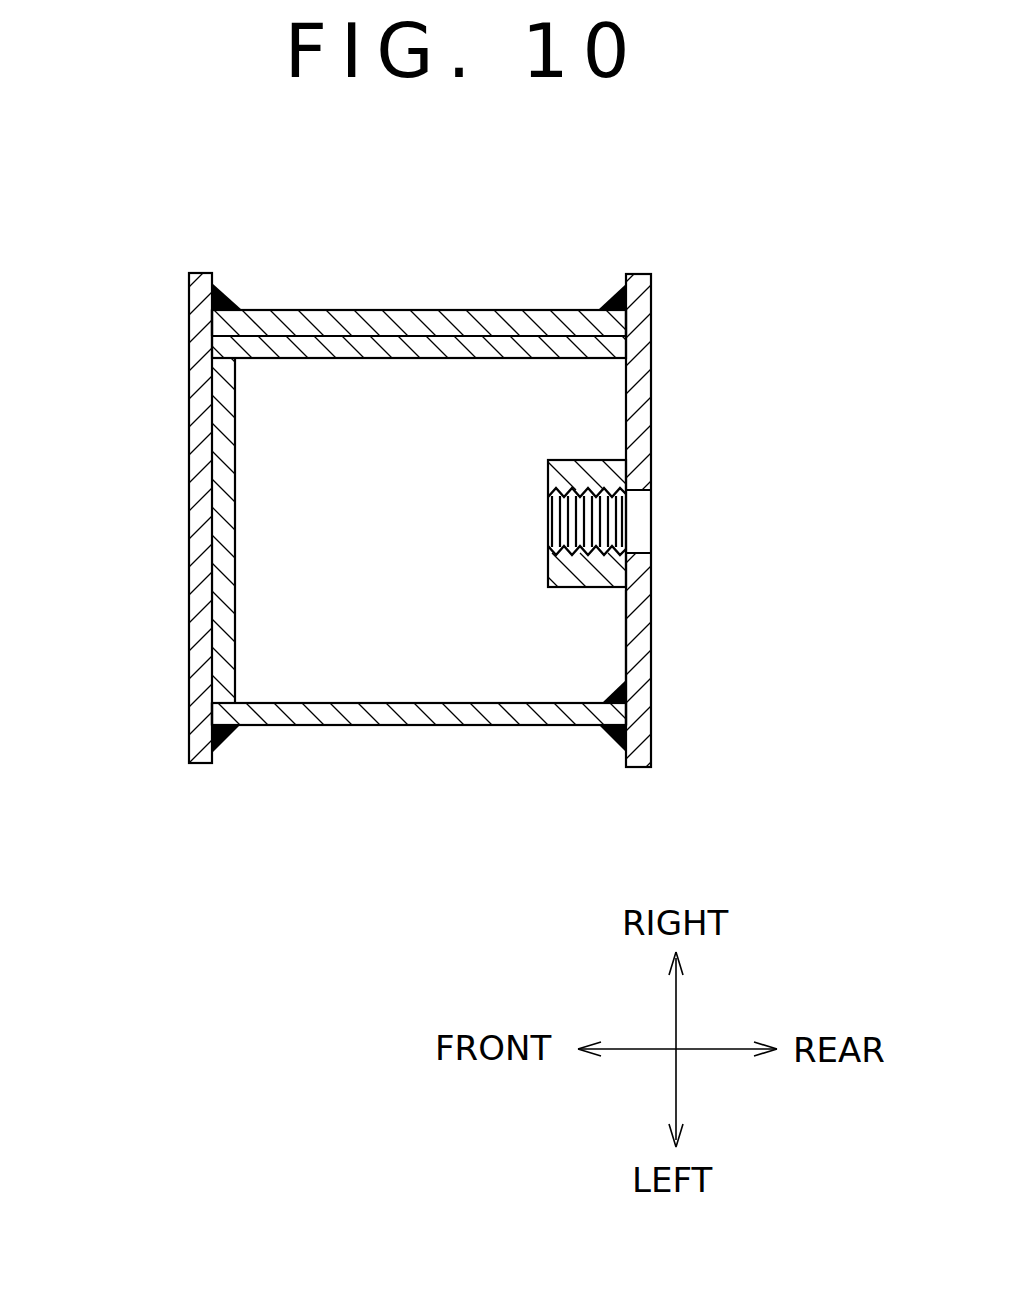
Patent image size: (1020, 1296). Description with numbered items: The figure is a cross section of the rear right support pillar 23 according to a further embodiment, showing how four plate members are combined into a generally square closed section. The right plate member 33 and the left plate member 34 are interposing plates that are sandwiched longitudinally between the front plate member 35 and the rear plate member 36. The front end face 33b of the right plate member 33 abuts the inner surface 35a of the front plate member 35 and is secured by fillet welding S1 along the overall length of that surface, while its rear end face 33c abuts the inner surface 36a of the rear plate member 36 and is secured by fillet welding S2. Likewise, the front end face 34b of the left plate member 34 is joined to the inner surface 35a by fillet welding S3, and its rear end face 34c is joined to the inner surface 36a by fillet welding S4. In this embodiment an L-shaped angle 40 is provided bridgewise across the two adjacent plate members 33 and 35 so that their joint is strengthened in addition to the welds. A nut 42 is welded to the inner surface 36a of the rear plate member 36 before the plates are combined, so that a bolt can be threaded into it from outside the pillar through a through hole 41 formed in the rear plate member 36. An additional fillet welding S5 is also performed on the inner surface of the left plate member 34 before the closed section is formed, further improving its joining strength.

The rear right support pillar 23 is at (327, 828).
The right plate member 33 is at (394, 310).
The front end face of the right plate member 33b is at (212, 320).
The rear end face of the right plate member 33c is at (627, 322).
The left plate member 34 is at (402, 727).
The front end face of the left plate member 34b is at (212, 703).
The rear end face of the left plate member 34c is at (627, 724).
The front plate member 35 is at (200, 542).
The inner surface of the front plate member 35a is at (218, 446).
The rear plate member 36 is at (630, 660).
The inner surface of the rear plate member 36a is at (626, 625).
The L-shaped angle 40 is at (222, 572).
The through hole 41 is at (652, 506).
The nut 42 is at (577, 477).
The fillet welding S1 is at (243, 304).
The fillet welding S2 is at (607, 300).
The fillet welding S3 is at (228, 742).
The fillet welding S4 is at (607, 742).
The fillet welding S5 is at (612, 690).